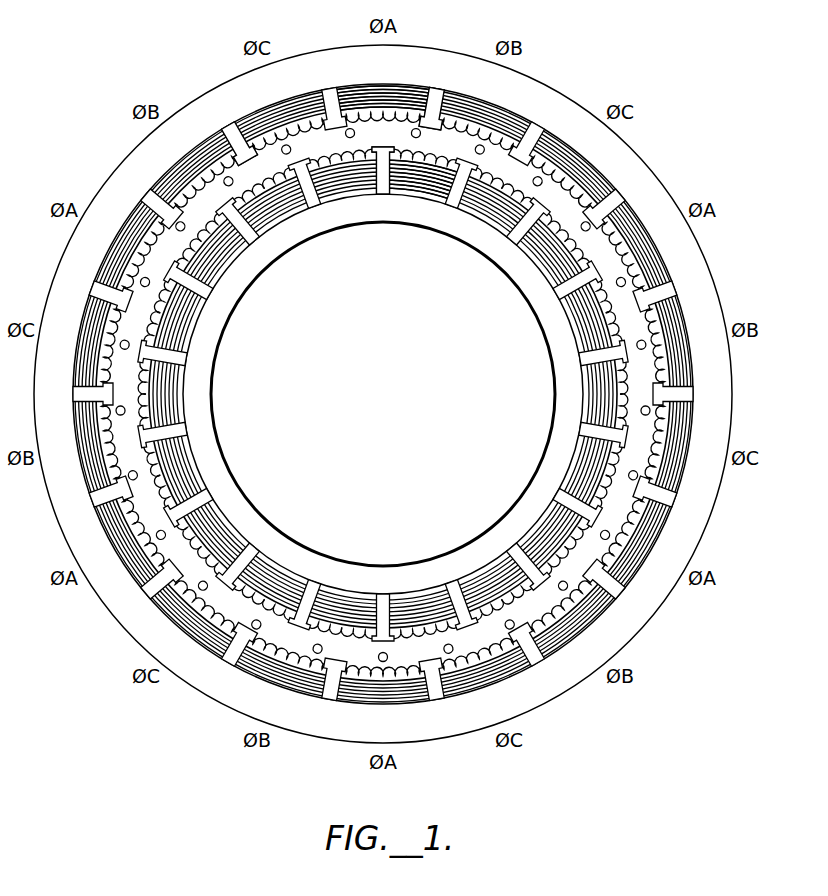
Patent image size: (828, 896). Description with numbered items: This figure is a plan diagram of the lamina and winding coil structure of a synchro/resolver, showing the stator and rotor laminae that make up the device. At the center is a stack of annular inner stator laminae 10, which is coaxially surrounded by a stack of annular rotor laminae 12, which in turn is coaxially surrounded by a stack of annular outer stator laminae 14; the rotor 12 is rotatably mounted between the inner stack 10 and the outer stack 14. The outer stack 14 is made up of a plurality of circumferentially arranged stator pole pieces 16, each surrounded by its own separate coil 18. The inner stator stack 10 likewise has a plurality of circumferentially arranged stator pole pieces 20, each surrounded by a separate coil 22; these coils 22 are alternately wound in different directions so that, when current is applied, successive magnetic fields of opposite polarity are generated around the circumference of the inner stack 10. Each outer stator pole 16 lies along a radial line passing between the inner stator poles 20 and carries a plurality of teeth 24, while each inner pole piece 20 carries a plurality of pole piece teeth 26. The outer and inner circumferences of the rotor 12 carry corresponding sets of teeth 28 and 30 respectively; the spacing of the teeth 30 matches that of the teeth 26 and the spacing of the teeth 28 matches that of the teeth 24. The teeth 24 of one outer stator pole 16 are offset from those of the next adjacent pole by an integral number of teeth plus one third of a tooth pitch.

The inner stator laminae 10 is at (282, 523).
The rotor laminae 12 is at (168, 570).
The outer stator laminae 14 is at (108, 582).
The stator pole pieces 16 is at (387, 88).
The coil 18 is at (337, 86).
The stator pole pieces 20 is at (428, 187).
The coil 22 is at (383, 185).
The teeth 24 is at (422, 97).
The pole piece teeth 26 is at (443, 157).
The teeth 28 is at (240, 158).
The teeth 30 is at (255, 180).